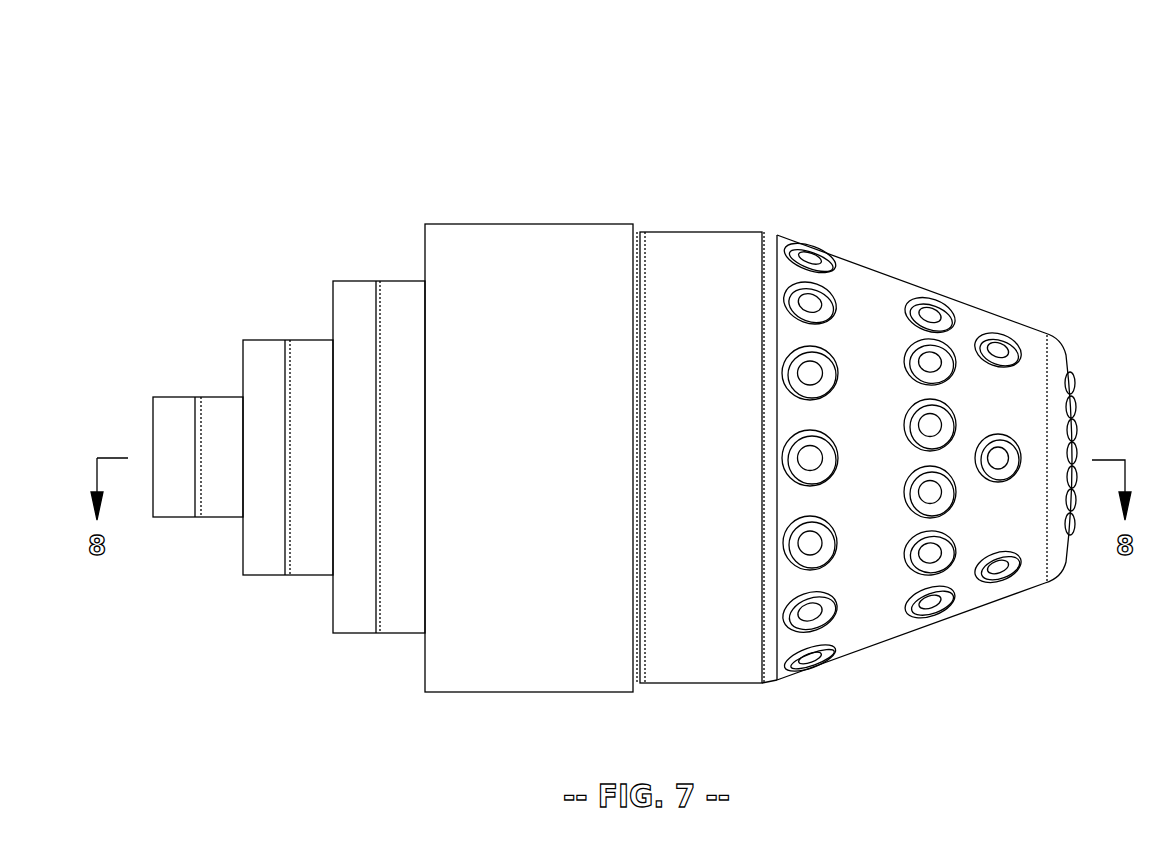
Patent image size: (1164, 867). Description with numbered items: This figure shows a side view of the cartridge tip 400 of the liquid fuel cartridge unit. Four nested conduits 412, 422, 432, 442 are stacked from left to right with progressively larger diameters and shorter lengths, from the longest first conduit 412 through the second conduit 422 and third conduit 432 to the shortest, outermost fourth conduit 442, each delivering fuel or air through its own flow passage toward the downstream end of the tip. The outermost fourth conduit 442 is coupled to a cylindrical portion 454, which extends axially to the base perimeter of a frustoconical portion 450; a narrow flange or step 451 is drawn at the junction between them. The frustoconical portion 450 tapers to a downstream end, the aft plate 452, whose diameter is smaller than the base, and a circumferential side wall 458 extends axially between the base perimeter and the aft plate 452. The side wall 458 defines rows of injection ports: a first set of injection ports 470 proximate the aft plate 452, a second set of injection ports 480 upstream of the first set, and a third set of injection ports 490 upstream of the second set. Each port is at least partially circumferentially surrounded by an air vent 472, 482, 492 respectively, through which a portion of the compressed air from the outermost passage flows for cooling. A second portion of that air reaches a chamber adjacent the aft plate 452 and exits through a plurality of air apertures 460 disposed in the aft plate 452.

The cartridge tip 400 is at (300, 150).
The first conduit 412 is at (218, 396).
The second conduit 422 is at (305, 339).
The third conduit 432 is at (393, 280).
The fourth conduit 442 is at (523, 224).
The frustoconical portion 450 is at (905, 694).
The base flange of nozzle head 451 is at (770, 684).
The aft plate 452 is at (1062, 375).
The cylindrical portion 454 is at (712, 232).
The circumferential side wall 458 is at (862, 282).
The air apertures 460 is at (1072, 457).
The first set of injection ports 470 is at (997, 345).
The air vent 472 is at (1012, 468).
The second set of injection ports 480 is at (935, 608).
The air vent 482 is at (908, 352).
The third set of injection ports 490 is at (813, 255).
The air vent 492 is at (782, 372).